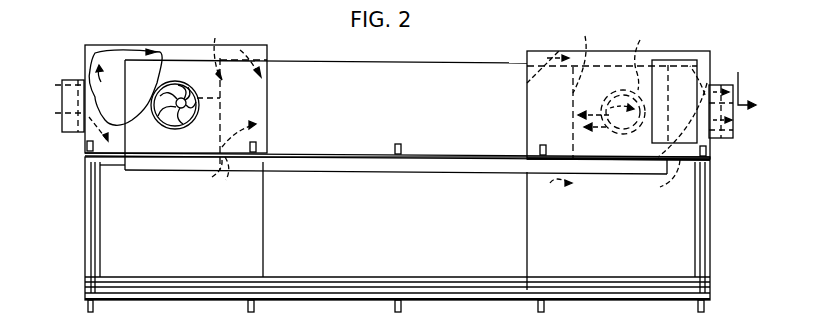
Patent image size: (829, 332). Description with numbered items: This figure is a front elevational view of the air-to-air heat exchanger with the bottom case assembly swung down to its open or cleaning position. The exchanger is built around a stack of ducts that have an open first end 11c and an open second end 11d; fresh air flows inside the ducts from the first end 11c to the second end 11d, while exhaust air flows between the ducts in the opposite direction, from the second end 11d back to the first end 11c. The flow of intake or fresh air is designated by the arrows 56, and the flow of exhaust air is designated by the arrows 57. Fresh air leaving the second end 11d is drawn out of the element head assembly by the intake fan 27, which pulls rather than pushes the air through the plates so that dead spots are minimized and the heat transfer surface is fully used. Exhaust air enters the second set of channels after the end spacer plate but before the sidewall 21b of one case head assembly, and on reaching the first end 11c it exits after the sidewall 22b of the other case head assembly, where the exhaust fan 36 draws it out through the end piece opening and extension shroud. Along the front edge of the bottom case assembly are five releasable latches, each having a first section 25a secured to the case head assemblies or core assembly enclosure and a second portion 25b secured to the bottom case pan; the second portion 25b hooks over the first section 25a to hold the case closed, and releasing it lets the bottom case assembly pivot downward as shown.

The fan 27 is at (179, 82).
The second end 11d is at (233, 49).
The sidewall 21b is at (267, 46).
The arrows 57 is at (553, 196).
The sidewall 22b is at (527, 52).
The first end 11c is at (585, 55).
The arrows 56 is at (640, 40).
The first section 25a is at (400, 150).
The second portion 25b is at (400, 300).
The fan 36 is at (733, 138).